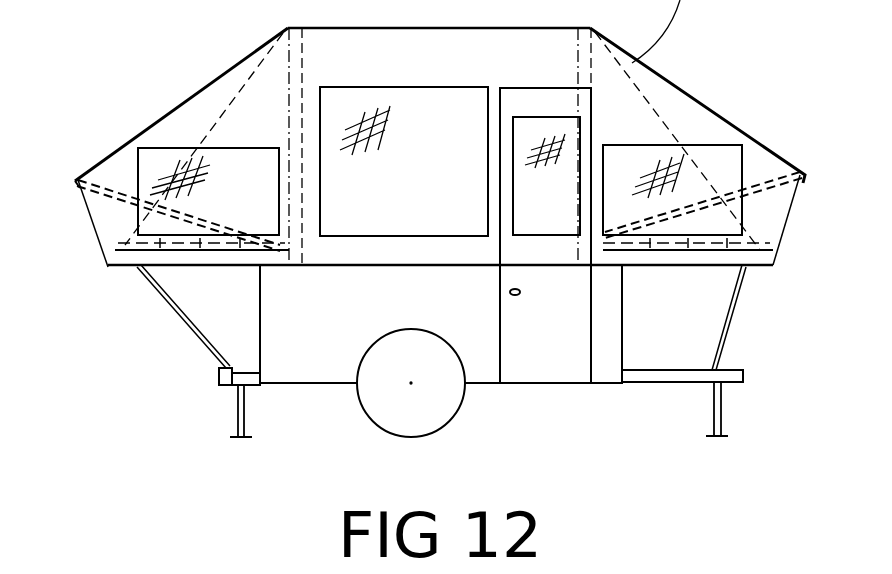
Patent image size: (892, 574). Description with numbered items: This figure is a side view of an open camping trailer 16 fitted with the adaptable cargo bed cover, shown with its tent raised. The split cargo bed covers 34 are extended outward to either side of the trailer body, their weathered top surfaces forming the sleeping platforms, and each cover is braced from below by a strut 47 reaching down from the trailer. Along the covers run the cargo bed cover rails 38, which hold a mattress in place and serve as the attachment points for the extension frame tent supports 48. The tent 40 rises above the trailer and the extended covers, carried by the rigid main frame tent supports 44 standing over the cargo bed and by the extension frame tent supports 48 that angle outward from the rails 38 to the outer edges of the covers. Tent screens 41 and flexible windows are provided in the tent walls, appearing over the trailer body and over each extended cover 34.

The camping trailer 16 is at (644, 417).
The cargo bed covers 34 is at (128, 268).
The cargo bed cover rails 38 is at (738, 238).
The tent 40 is at (672, 78).
The tent screens 41 is at (168, 163).
The rigid main frame tent supports 44 is at (283, 67).
The support brace 47 is at (180, 322).
The extension frame tent supports 48 is at (118, 197).